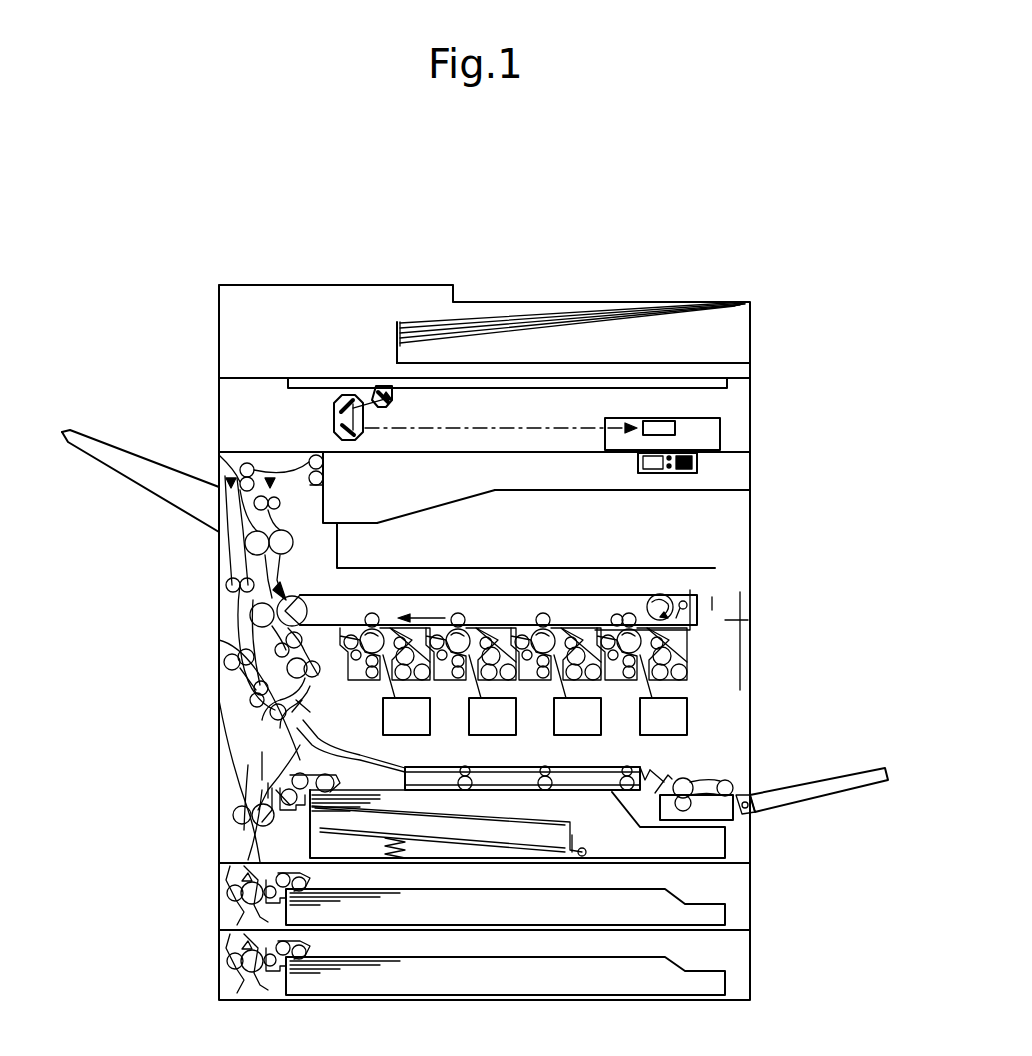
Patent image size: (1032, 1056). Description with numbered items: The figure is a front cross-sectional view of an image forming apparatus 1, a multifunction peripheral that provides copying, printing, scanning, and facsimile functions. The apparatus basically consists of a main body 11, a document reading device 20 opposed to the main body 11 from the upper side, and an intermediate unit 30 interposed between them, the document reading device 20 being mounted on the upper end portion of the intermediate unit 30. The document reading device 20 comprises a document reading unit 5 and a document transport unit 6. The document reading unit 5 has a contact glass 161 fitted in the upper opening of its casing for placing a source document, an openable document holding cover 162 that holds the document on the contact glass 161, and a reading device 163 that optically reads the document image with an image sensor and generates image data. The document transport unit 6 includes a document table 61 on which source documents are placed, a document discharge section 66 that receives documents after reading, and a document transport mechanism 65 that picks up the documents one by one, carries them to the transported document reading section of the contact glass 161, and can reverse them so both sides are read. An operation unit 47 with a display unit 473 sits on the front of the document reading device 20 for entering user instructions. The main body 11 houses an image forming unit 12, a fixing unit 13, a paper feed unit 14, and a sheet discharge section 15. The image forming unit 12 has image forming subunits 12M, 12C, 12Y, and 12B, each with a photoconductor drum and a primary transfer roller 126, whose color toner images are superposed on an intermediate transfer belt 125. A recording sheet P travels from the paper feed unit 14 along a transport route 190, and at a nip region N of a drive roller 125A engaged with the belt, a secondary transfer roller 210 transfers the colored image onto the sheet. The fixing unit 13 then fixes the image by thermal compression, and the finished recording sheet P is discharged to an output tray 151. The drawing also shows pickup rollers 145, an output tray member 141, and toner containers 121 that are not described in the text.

The image forming apparatus 1 is at (830, 354).
The document reading unit 5 is at (200, 404).
The document transport unit 6 is at (604, 296).
The document table 61 is at (657, 306).
The document transport mechanism 65 is at (320, 355).
The document discharge section 66 is at (668, 364).
The contact glass 161 is at (622, 388).
The document holding cover 162 is at (560, 373).
The reading device 163 is at (325, 412).
The document reading device 20 is at (760, 400).
The intermediate unit 30 is at (205, 462).
The main body 11 is at (752, 556).
The sheet discharge section 15 is at (410, 510).
The output tray 151 is at (360, 523).
The display unit 473 is at (638, 463).
The operation unit 47 is at (700, 462).
The fixing unit 13 is at (240, 546).
The nip region N is at (255, 592).
The drive roller 125A is at (322, 585).
The image forming unit 12 is at (718, 632).
The image forming subunit 12B is at (383, 610).
The image forming subunit 12Y is at (460, 605).
The image forming subunit 12C is at (545, 610).
The image forming subunit 12M is at (632, 606).
The intermediate transfer belt 125 is at (645, 602).
The primary transfer roller 126 is at (614, 612).
The toner container 121 is at (628, 735).
The transport route 190 is at (290, 612).
The secondary transfer roller 210 is at (238, 650).
The pickup roller 145 is at (290, 945).
The sheet discharge tray 141 is at (840, 782).
The recording sheet P is at (555, 822).
The paper feed unit 14 is at (740, 887).